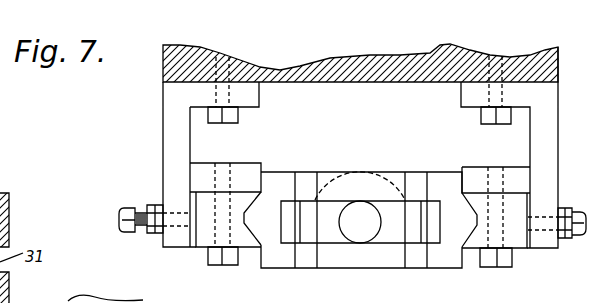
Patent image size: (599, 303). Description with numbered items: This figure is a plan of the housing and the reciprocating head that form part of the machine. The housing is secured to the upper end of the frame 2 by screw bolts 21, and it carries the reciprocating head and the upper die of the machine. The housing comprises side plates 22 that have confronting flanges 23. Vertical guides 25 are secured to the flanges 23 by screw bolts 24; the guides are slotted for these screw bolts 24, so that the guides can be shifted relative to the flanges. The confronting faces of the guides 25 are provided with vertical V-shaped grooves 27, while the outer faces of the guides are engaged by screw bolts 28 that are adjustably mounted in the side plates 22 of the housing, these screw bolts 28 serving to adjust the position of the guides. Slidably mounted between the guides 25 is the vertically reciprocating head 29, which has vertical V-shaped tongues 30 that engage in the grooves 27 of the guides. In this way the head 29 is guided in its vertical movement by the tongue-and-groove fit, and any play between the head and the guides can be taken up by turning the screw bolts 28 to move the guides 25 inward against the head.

The frame 2 is at (370, 76).
The screw bolts 21 is at (240, 122).
The side plates 22 is at (164, 141).
The confronting flanges 23 is at (249, 164).
The screw bolts 24 is at (233, 266).
The vertical guides 25 is at (196, 249).
The V-shaped grooves 27 is at (251, 246).
The screw bolts 28 is at (139, 231).
The reciprocating head 29 is at (308, 272).
The V-shaped tongues 30 is at (360, 219).